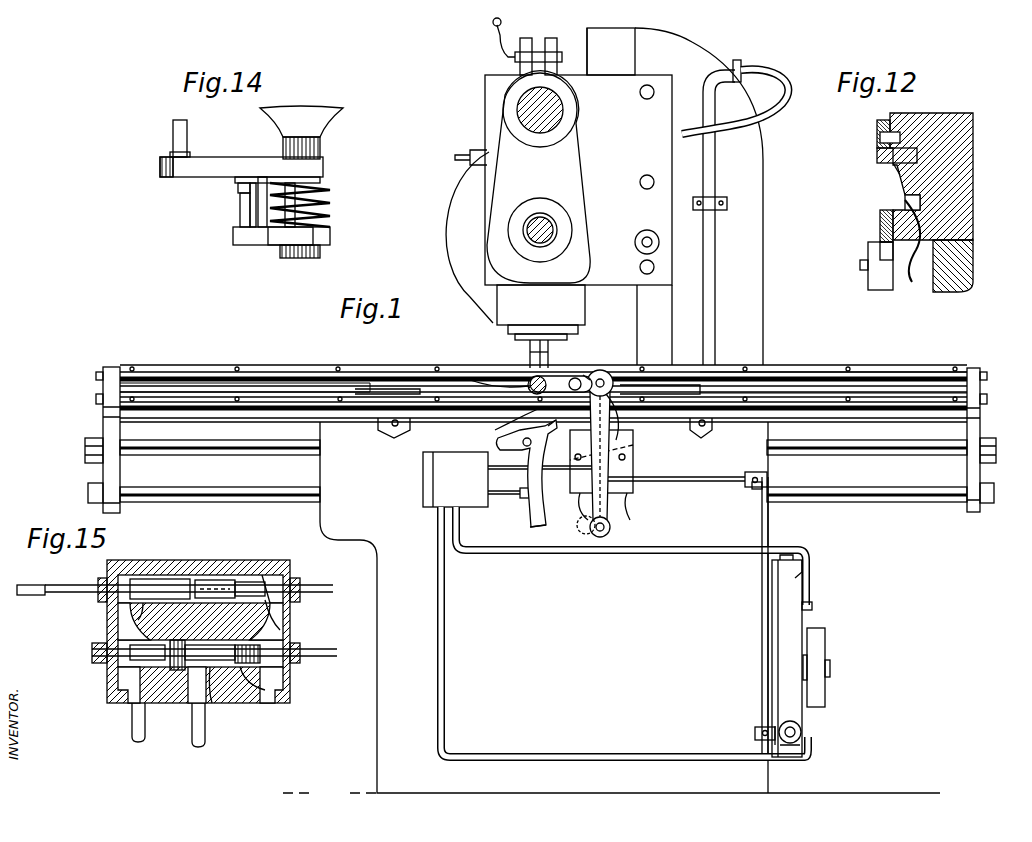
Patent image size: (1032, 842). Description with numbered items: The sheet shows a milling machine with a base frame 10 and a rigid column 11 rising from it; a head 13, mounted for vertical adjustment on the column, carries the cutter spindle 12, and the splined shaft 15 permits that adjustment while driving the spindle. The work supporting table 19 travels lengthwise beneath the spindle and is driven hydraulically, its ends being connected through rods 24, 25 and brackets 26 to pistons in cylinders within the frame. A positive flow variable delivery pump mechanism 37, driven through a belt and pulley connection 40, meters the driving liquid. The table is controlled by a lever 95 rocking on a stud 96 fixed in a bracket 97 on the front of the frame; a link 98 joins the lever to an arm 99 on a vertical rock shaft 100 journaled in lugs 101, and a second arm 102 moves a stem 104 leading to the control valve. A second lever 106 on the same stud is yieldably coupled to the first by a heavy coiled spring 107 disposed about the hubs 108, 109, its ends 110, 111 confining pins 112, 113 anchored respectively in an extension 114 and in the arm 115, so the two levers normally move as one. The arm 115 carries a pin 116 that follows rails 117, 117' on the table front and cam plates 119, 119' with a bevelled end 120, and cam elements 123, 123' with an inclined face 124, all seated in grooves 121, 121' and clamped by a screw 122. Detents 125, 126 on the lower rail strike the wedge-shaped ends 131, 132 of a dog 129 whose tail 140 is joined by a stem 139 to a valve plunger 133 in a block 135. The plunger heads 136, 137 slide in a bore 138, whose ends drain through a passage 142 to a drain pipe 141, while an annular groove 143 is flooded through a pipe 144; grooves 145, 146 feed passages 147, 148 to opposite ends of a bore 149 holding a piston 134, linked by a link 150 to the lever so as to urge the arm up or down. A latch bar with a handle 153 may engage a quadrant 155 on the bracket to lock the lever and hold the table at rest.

In FIG. 1, the base frame 10 is at (377, 738).
In FIG. 1, the column 11 is at (752, 298).
In FIG. 1, the cutter spindle 12 is at (540, 222).
In FIG. 1, the head 13 is at (655, 96).
In FIG. 1, the splined shaft 15 is at (528, 352).
In FIG. 1, the work supporting table 19 is at (265, 362).
In FIG. 1, the rod 24 is at (232, 446).
In FIG. 1, the rod 25 is at (232, 490).
In FIG. 1, the bracket 26 is at (108, 430).
In FIG. 1, the pump mechanism 37 is at (796, 624).
In FIG. 1, the belt and pulley connection 40 is at (818, 641).
In FIG. 1, the lever 95 is at (612, 512).
In FIG. 14, the lever 95 is at (332, 243).
In FIG. 1, the stud 96 is at (601, 372).
In FIG. 1, the bracket 97 is at (635, 466).
In FIG. 14, the bracket 97 is at (320, 118).
In FIG. 1, the link 98 is at (718, 486).
In FIG. 1, the arm 99 is at (755, 490).
In FIG. 1, the vertical rock shaft 100 is at (770, 526).
In FIG. 1, the lug 101 is at (753, 470).
In FIG. 1, the second arm 102 is at (780, 745).
In FIG. 1, the stem 104 is at (800, 728).
In FIG. 1, the second lever 106 is at (636, 448).
In FIG. 14, the second lever 106 is at (323, 168).
In FIG. 14, the coiled spring 107 is at (332, 210).
In FIG. 14, the hub 108 is at (290, 228).
In FIG. 14, the hub 109 is at (320, 180).
In FIG. 14, the spring end 110 is at (240, 188).
In FIG. 14, the spring end 111 is at (244, 200).
In FIG. 14, the pin 112 is at (245, 200).
In FIG. 14, the pin 113 is at (262, 178).
In FIG. 1, the extension 114 is at (586, 376).
In FIG. 14, the extension 114 is at (260, 242).
In FIG. 14, the arm 115 is at (222, 154).
In FIG. 1, the pin 116 is at (560, 378).
In FIG. 14, the pin 116 is at (175, 135).
In FIG. 1, the upper rail 117 is at (833, 353).
In FIG. 12, the upper rail 117 is at (863, 128).
In FIG. 1, the lower rail 117' is at (833, 367).
In FIG. 12, the lower rail 117' is at (865, 235).
In FIG. 1, the cam plate 119 is at (687, 364).
In FIG. 12, the cam plate 119 is at (873, 154).
In FIG. 1, the cam element 119' is at (397, 365).
In FIG. 1, the bevelled end 120 is at (660, 374).
In FIG. 1, the longitudinal groove 121 is at (257, 366).
In FIG. 12, the longitudinal groove 121 is at (931, 193).
In FIG. 12, the groove 121' is at (910, 252).
In FIG. 12, the screw 122 is at (880, 137).
In FIG. 1, the second cam element 123 is at (541, 327).
In FIG. 1, the cam element 123' is at (498, 426).
In FIG. 1, the inclined face 124 is at (482, 378).
In FIG. 1, the detent 125 is at (385, 432).
In FIG. 1, the detent 126 is at (708, 428).
In FIG. 12, the detent 126 is at (872, 268).
In FIG. 1, the dog 129 is at (521, 444).
In FIG. 1, the dog end 131 is at (506, 422).
In FIG. 1, the dog end 132 is at (552, 428).
In FIG. 15, the valve plunger 133 is at (210, 672).
In FIG. 15, the piston 134 is at (213, 578).
In FIG. 1, the block 135 is at (440, 465).
In FIG. 15, the block 135 is at (158, 562).
In FIG. 15, the head 136 is at (175, 690).
In FIG. 15, the head 137 is at (262, 652).
In FIG. 15, the bore 138 is at (110, 672).
In FIG. 1, the stem 139 is at (503, 498).
In FIG. 15, the stem 139 is at (330, 650).
In FIG. 1, the tail 140 is at (538, 527).
In FIG. 1, the drain pipe 141 is at (446, 646).
In FIG. 15, the drain pipe 141 is at (135, 730).
In FIG. 15, the passage 142 is at (238, 693).
In FIG. 15, the annular groove 143 is at (182, 578).
In FIG. 1, the pipe 144 is at (648, 553).
In FIG. 15, the pipe 144 is at (197, 738).
In FIG. 15, the groove 145 is at (160, 668).
In FIG. 15, the groove 146 is at (280, 688).
In FIG. 15, the passage 147 is at (125, 618).
In FIG. 15, the passage 148 is at (285, 620).
In FIG. 15, the bore 149 is at (255, 575).
In FIG. 1, the link 150 is at (562, 470).
In FIG. 15, the link 150 is at (320, 584).
In FIG. 1, the handle 153 is at (597, 540).
In FIG. 1, the quadrant 155 is at (627, 520).